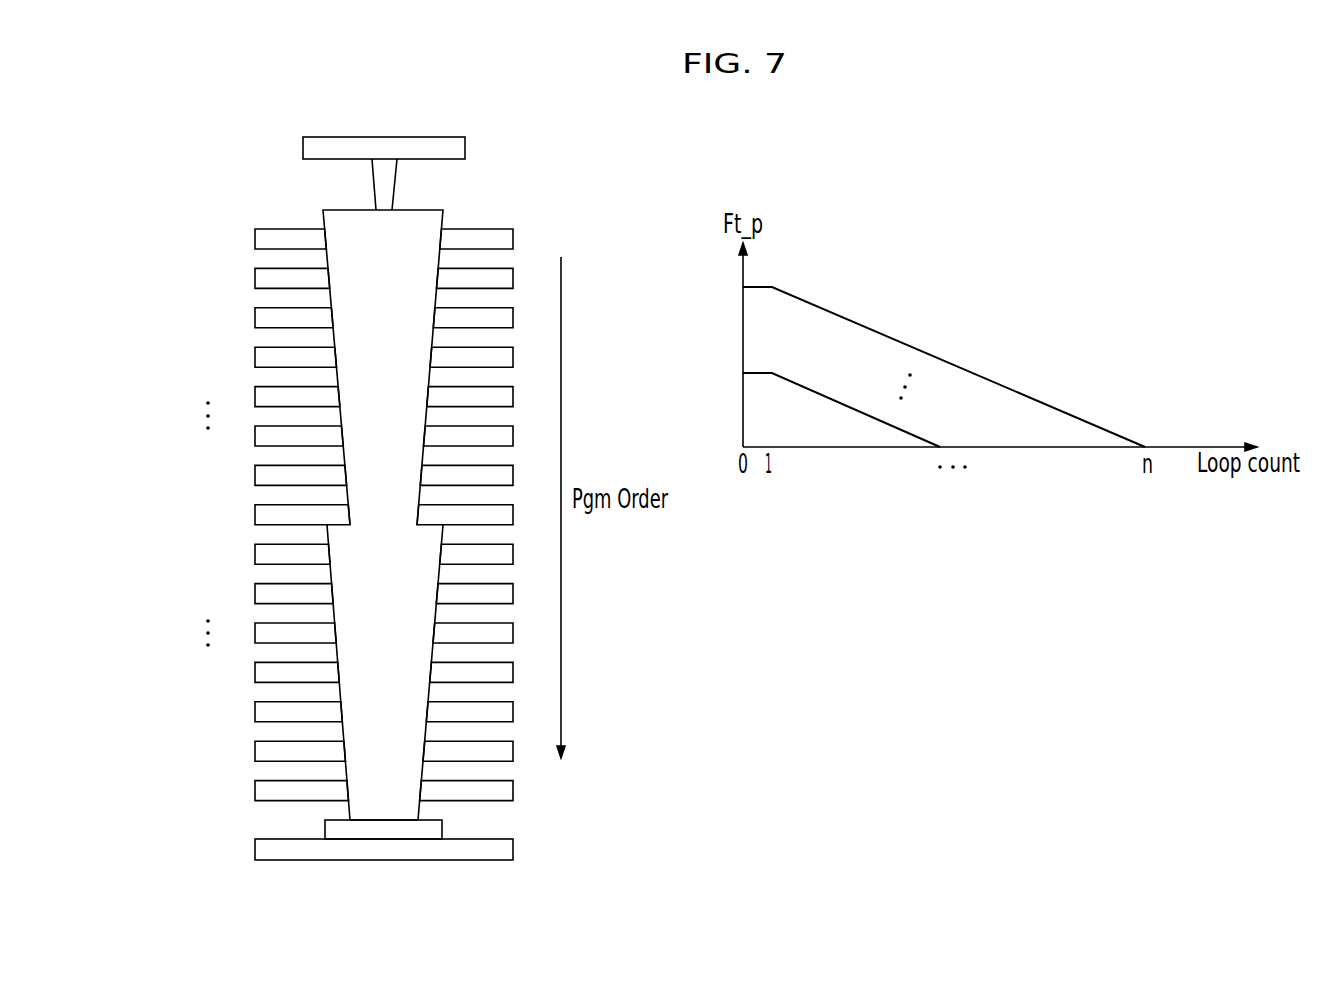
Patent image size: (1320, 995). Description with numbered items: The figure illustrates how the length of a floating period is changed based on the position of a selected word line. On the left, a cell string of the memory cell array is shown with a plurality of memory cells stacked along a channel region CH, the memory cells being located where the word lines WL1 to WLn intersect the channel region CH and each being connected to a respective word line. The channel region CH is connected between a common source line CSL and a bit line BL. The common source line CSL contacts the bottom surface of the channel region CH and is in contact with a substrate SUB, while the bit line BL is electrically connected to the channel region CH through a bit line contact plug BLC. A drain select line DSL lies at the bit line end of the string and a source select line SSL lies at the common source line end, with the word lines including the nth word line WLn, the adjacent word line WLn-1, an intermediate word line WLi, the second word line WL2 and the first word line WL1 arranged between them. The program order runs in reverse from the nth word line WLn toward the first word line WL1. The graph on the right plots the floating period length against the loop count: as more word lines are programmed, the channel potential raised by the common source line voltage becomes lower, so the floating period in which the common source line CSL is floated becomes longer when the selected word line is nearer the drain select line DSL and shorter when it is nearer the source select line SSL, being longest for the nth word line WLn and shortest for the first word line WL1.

The bit line BL is at (303, 149).
The bit line contact plug BLC is at (374, 183).
The channel region CH is at (418, 218).
The drain select line DSL is at (252, 241).
The nth word line WLn is at (250, 279).
The word line n-1 WLn-1 is at (254, 319).
The word line i WLi is at (250, 554).
The second word line WL2 is at (250, 711).
The first word line WL1 is at (250, 750).
The source select line SSL is at (252, 789).
The common source line CSL is at (325, 828).
The substrate SUB is at (255, 849).